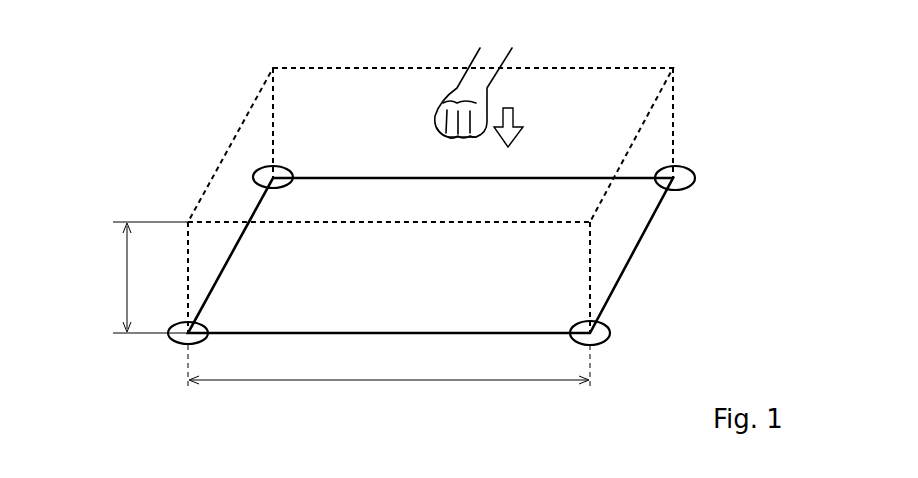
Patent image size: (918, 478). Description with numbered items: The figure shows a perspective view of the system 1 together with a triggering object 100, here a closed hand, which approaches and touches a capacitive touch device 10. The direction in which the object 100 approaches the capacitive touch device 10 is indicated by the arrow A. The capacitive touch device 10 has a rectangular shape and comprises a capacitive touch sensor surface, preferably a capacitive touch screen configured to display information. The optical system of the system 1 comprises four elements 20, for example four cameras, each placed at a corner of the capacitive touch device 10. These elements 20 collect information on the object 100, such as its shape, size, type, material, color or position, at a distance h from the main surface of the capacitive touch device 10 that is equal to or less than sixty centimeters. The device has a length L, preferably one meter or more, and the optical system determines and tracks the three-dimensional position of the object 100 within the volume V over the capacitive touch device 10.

The system 1 is at (438, 259).
The capacitive touch device 10 is at (561, 314).
The elements 20 is at (288, 168).
The object 100 is at (477, 63).
The volume V is at (616, 93).
The arrow A is at (512, 122).
The distance h is at (146, 277).
The length L is at (389, 365).